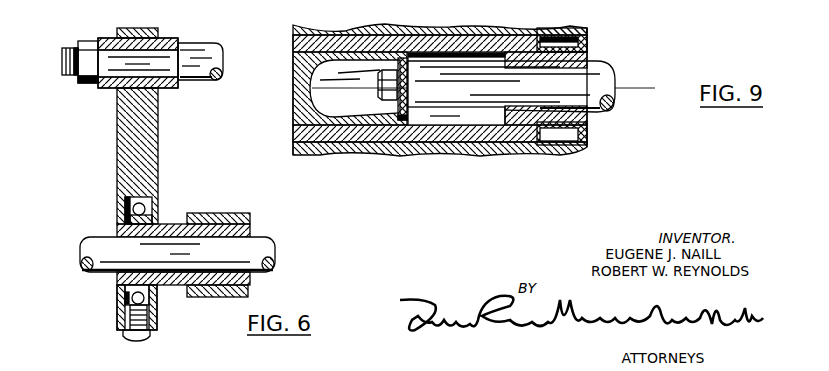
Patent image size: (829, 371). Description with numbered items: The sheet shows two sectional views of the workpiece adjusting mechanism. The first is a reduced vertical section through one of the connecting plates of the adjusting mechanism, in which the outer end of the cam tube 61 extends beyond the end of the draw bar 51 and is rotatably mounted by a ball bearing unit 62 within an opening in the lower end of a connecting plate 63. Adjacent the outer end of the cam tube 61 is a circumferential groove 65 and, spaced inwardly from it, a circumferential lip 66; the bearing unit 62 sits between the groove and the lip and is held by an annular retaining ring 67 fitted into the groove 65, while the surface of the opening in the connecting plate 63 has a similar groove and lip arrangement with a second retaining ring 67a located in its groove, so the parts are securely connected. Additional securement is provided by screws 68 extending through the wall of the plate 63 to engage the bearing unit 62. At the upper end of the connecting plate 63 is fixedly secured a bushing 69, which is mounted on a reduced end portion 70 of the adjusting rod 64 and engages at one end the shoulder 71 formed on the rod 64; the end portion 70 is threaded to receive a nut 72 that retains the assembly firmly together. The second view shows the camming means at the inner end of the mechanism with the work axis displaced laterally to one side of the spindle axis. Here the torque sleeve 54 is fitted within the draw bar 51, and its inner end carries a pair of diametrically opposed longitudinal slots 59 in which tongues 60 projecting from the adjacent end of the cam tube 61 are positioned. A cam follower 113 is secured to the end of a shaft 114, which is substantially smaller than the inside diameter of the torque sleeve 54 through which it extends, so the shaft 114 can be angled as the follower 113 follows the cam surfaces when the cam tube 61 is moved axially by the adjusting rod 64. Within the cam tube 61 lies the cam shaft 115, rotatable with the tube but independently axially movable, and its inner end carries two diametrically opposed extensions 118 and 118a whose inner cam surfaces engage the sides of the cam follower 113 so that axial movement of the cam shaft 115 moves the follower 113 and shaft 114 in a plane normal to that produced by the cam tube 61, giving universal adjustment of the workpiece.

In FIG. 6, the draw bar 51 is at (216, 219).
In FIG. 9, the draw bar 51 is at (300, 31).
In FIG. 9, the torque sleeve 54 is at (578, 53).
In FIG. 9, the longitudinal slots 59 is at (588, 136).
In FIG. 9, the tongues 60 is at (514, 133).
In FIG. 6, the cam tube 61 is at (167, 230).
In FIG. 9, the cam tube 61 is at (296, 42).
In FIG. 6, the ball bearing unit 62 is at (150, 306).
In FIG. 6, the connecting plate 63 is at (143, 141).
In FIG. 6, the adjusting rod 64 is at (216, 55).
In FIG. 6, the circumferential groove 65 is at (117, 278).
In FIG. 6, the circumferential lip 66 is at (152, 289).
In FIG. 6, the annular retaining ring 67 is at (124, 297).
In FIG. 6, the second retaining ring 67a is at (124, 203).
In FIG. 6, the screws 68 is at (130, 338).
In FIG. 6, the bushing 69 is at (135, 40).
In FIG. 6, the reduced end portion 70 is at (117, 58).
In FIG. 6, the shoulder 71 is at (180, 62).
In FIG. 6, the nut 72 is at (78, 46).
In FIG. 9, the cam follower 113 is at (392, 97).
In FIG. 9, the shaft 114 is at (609, 88).
In FIG. 6, the cam shaft 115 is at (105, 243).
In FIG. 9, the cam shaft 115 is at (380, 79).
In FIG. 9, the extension 118 is at (393, 57).
In FIG. 9, the extension 118a is at (398, 118).